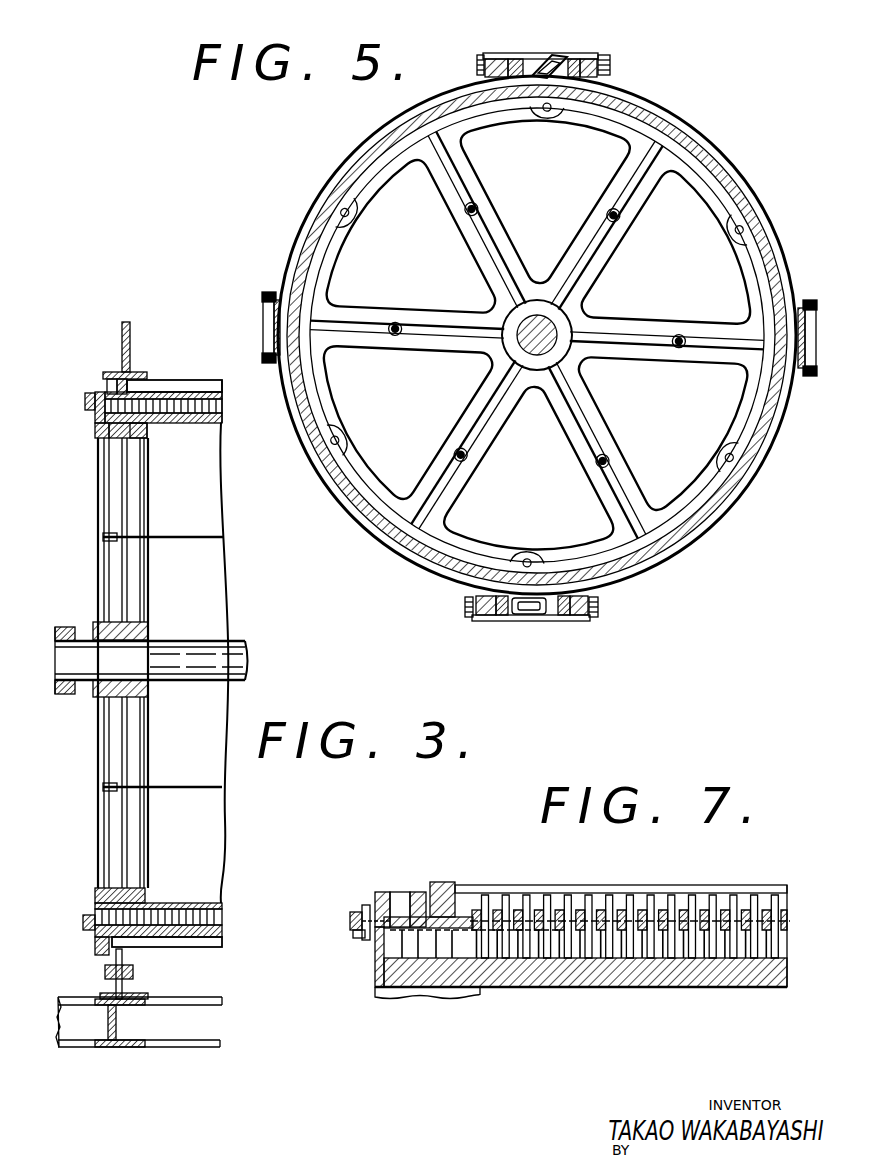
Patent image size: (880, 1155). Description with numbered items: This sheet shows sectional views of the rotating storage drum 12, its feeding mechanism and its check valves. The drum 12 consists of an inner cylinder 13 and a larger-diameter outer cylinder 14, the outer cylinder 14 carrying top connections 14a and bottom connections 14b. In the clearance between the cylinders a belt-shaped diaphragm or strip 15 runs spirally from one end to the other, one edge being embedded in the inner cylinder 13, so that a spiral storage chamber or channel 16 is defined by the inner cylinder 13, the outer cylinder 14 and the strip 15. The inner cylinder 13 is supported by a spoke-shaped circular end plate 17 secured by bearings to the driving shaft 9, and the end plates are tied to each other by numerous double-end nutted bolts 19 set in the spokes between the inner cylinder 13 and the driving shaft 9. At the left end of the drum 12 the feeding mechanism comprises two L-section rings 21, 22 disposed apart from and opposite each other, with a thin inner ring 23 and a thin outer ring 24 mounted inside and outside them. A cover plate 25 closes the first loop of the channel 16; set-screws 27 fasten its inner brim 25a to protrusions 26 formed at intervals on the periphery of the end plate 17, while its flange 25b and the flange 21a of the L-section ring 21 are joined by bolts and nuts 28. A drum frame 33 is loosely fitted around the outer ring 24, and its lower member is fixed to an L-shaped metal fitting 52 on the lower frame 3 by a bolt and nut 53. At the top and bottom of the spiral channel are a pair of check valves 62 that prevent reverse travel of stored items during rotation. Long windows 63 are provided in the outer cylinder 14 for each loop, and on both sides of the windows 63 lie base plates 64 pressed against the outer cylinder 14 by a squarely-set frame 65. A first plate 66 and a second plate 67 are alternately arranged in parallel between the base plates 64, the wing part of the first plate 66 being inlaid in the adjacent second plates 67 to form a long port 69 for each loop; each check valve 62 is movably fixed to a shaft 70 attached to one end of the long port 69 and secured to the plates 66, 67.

In FIG. 3, the lower frame 3 is at (126, 1006).
In FIG. 5, the driving shaft 9 is at (534, 323).
In FIG. 3, the driving shaft 9 is at (191, 641).
In FIG. 3, the drum 12 is at (229, 412).
In FIG. 5, the inner cylinder 13 is at (716, 178).
In FIG. 3, the inner cylinder 13 is at (214, 421).
In FIG. 7, the inner cylinder 13 is at (688, 990).
In FIG. 5, the outer cylinder 14 is at (716, 152).
In FIG. 5, the top connections 14a is at (807, 380).
In FIG. 3, the top connections 14a is at (185, 384).
In FIG. 5, the bottom connections 14b is at (268, 323).
In FIG. 3, the bottom connections 14b is at (202, 948).
In FIG. 3, the diaphragm or strip 15 is at (186, 399).
In FIG. 7, the diaphragm or strip 15 is at (412, 958).
In FIG. 5, the storage chamber or channel 16 is at (740, 187).
In FIG. 3, the storage chamber or channel 16 is at (205, 410).
In FIG. 7, the storage chamber or channel 16 is at (470, 950).
In FIG. 5, the end plate 17 is at (670, 330).
In FIG. 3, the end plate 17 is at (122, 562).
In FIG. 5, the double-end nutted bolts 19 is at (476, 207).
In FIG. 3, the double-end nutted bolts 19 is at (190, 539).
In FIG. 3, the L-section ring 21 is at (106, 382).
In FIG. 7, the L-section ring 21 is at (378, 896).
In FIG. 3, the flange 21a is at (96, 404).
In FIG. 7, the flange 21a is at (363, 912).
In FIG. 3, the L-section ring 22 is at (124, 381).
In FIG. 7, the L-section ring 22 is at (421, 894).
In FIG. 3, the inner ring 23 is at (102, 437).
In FIG. 3, the outer ring 24 is at (112, 372).
In FIG. 7, the outer ring 24 is at (393, 893).
In FIG. 3, the cover plate 25 is at (86, 920).
In FIG. 7, the cover plate 25 is at (376, 990).
In FIG. 3, the inner brim 25a is at (96, 892).
In FIG. 3, the flange 25b is at (96, 428).
In FIG. 7, the flange 25b is at (372, 936).
In FIG. 3, the protrusions 26 is at (136, 458).
In FIG. 3, the set-screws 27 is at (142, 431).
In FIG. 3, the bolts and nuts 28 is at (88, 395).
In FIG. 7, the bolts and nuts 28 is at (350, 922).
In FIG. 3, the drum frame 33 is at (138, 336).
In FIG. 3, the L-shaped metal fitting 52 is at (140, 994).
In FIG. 3, the bolt and nut 53 is at (106, 968).
In FIG. 5, the check valve 62 is at (560, 60).
In FIG. 7, the check valve 62 is at (651, 898).
In FIG. 5, the long windows 63 is at (536, 78).
In FIG. 5, the base plates 64 is at (498, 56).
In FIG. 5, the squarely-set frame 65 is at (594, 60).
In FIG. 7, the first plate 66 is at (477, 908).
In FIG. 5, the second plate 67 is at (530, 64).
In FIG. 7, the second plate 67 is at (500, 908).
In FIG. 7, the long port 69 is at (704, 910).
In FIG. 7, the shaft 70 is at (788, 921).